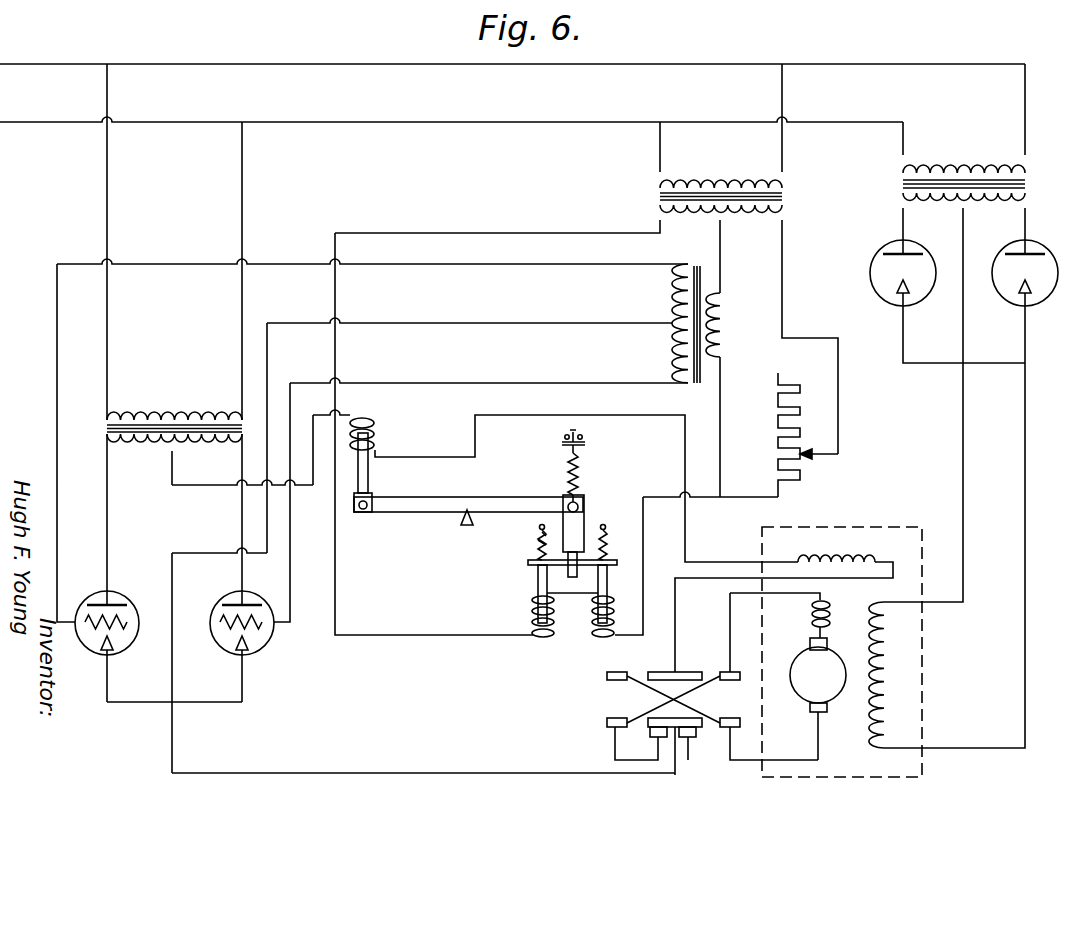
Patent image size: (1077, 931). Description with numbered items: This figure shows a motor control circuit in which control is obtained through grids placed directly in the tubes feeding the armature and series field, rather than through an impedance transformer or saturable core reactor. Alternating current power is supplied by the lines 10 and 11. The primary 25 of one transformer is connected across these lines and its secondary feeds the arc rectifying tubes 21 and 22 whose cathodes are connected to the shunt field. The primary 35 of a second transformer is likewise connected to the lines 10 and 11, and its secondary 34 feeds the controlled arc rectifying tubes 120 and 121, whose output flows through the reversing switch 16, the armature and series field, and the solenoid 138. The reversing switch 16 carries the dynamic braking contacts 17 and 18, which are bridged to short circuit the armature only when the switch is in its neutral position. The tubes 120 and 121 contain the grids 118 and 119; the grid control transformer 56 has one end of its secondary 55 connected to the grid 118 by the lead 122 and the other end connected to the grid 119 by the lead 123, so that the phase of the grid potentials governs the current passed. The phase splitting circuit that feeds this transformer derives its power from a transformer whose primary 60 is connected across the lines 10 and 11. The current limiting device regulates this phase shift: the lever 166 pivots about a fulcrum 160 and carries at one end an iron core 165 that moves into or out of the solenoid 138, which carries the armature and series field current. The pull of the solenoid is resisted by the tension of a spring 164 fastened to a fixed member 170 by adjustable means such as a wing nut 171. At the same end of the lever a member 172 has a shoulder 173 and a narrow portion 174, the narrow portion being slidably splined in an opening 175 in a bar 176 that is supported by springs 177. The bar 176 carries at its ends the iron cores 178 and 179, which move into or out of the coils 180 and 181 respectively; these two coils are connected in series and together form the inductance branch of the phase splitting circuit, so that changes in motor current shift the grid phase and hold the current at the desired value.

The alternating current line 10 is at (249, 63).
The alternating current line 11 is at (377, 112).
The primary 60 is at (712, 172).
The primary 25 is at (956, 157).
The arc rectifying tube 21 is at (880, 250).
The arc rectifying tube 22 is at (1004, 305).
The secondary 55 is at (672, 300).
The grid control transformer 56 is at (699, 393).
The lead 122 is at (452, 266).
The lead 123 is at (484, 383).
The primary 35 is at (176, 403).
The secondary 34 is at (185, 450).
The solenoid 138 is at (376, 420).
The iron core 165 is at (370, 465).
The lever 166 is at (462, 496).
The fulcrum 160 is at (458, 524).
The fixed member 170 is at (587, 443).
The wing nut 171 is at (563, 439).
The spring 164 is at (586, 472).
The member 172 is at (588, 505).
The shoulder 173 is at (585, 524).
The springs 177 is at (540, 538).
The bar 176 is at (538, 556).
The opening 175 is at (528, 563).
The narrow portion 174 is at (538, 584).
The iron core 178 is at (545, 593).
The coil 180 is at (532, 620).
The iron core 179 is at (593, 607).
The coil 181 is at (612, 633).
The grid 118 is at (120, 622).
The controlled arc rectifying tube 120 is at (127, 650).
The grid 119 is at (262, 630).
The controlled arc rectifying tube 121 is at (216, 650).
The reversing switch 16 is at (612, 701).
The dynamic braking contact 17 is at (652, 738).
The dynamic braking contact 18 is at (690, 738).